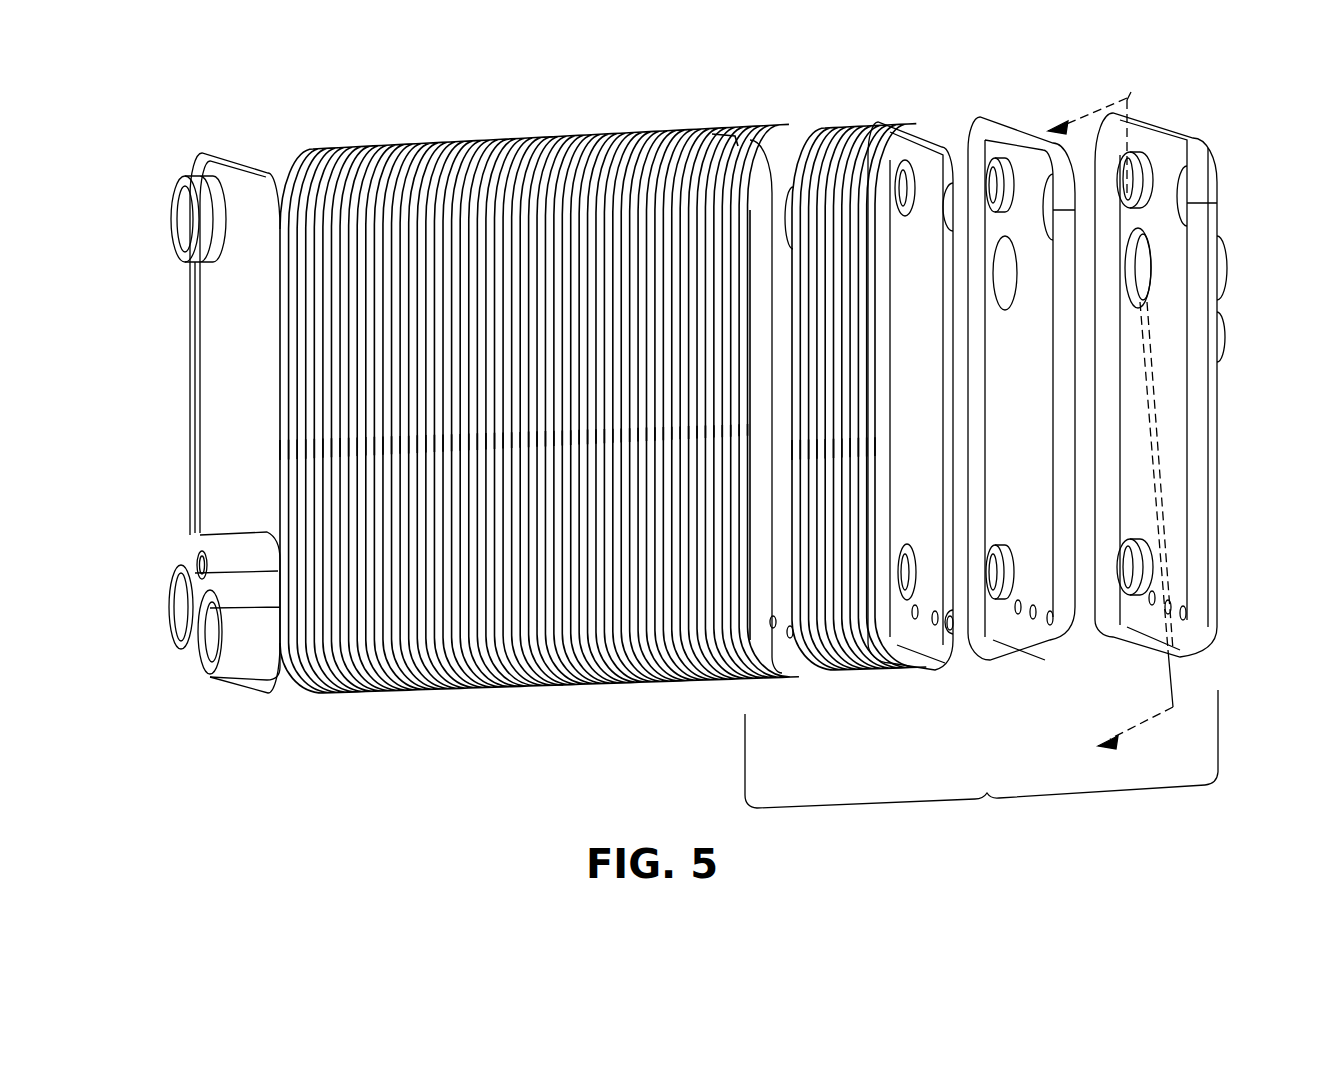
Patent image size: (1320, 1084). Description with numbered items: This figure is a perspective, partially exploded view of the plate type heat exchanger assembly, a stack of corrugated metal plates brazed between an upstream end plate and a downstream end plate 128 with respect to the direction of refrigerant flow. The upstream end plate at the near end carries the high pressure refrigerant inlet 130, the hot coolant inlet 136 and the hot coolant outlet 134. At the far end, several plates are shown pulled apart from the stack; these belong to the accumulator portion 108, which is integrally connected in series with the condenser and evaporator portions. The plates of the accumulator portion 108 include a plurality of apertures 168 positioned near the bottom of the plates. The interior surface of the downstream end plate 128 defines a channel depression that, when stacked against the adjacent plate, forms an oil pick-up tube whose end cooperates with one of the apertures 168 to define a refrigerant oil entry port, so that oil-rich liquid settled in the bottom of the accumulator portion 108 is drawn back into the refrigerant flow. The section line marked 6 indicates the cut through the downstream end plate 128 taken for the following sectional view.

The hot coolant inlet 136 is at (182, 212).
The hot coolant outlet 134 is at (180, 607).
The high pressure refrigerant inlet 130 is at (215, 635).
The downstream end plate 128 is at (1193, 153).
The apertures 168 is at (932, 615).
The accumulator portion 108 is at (981, 482).
The section line 6- 6 is at (1110, 423).